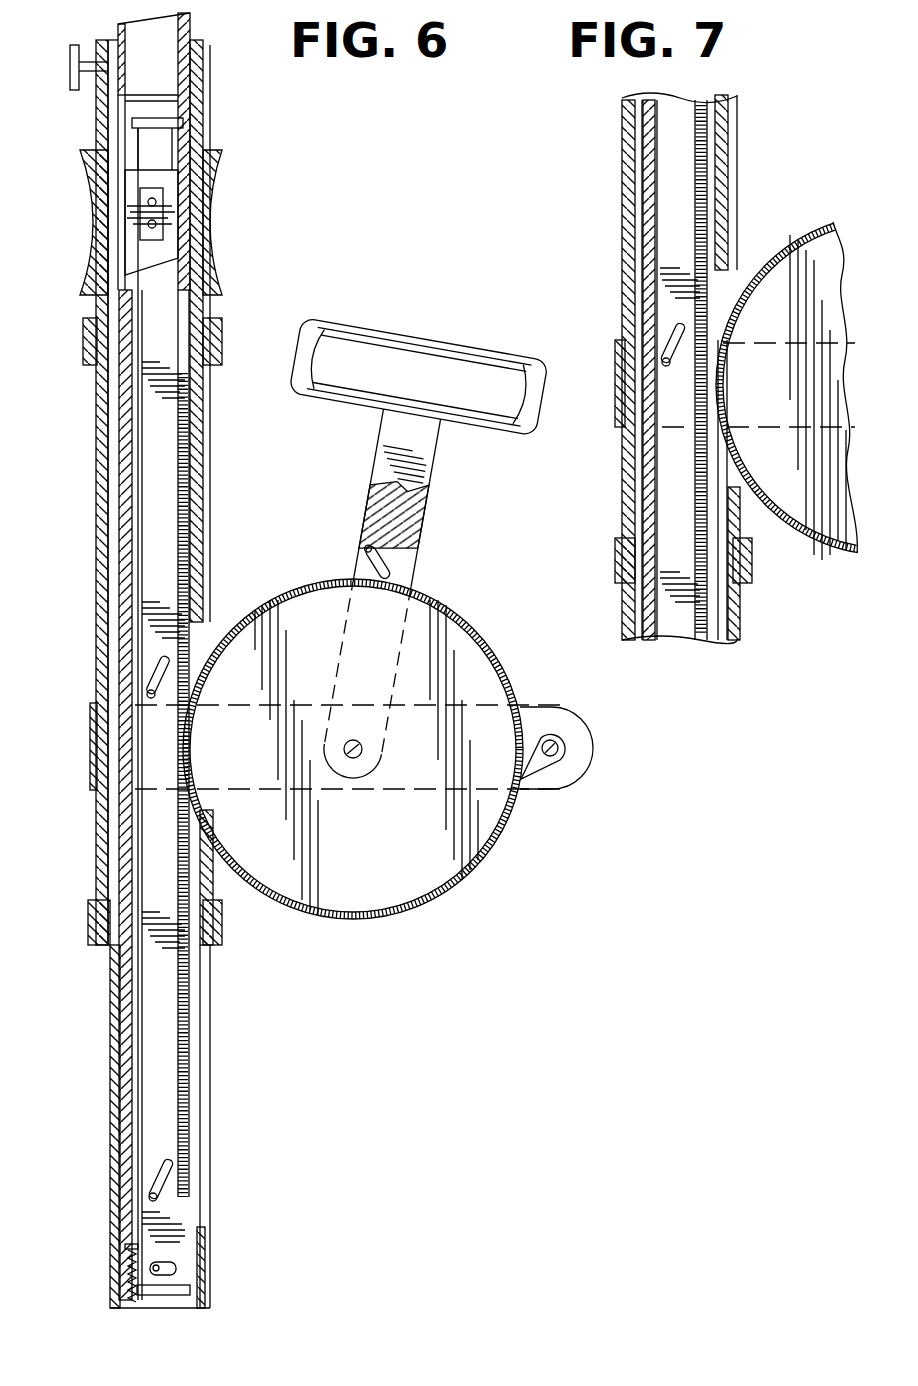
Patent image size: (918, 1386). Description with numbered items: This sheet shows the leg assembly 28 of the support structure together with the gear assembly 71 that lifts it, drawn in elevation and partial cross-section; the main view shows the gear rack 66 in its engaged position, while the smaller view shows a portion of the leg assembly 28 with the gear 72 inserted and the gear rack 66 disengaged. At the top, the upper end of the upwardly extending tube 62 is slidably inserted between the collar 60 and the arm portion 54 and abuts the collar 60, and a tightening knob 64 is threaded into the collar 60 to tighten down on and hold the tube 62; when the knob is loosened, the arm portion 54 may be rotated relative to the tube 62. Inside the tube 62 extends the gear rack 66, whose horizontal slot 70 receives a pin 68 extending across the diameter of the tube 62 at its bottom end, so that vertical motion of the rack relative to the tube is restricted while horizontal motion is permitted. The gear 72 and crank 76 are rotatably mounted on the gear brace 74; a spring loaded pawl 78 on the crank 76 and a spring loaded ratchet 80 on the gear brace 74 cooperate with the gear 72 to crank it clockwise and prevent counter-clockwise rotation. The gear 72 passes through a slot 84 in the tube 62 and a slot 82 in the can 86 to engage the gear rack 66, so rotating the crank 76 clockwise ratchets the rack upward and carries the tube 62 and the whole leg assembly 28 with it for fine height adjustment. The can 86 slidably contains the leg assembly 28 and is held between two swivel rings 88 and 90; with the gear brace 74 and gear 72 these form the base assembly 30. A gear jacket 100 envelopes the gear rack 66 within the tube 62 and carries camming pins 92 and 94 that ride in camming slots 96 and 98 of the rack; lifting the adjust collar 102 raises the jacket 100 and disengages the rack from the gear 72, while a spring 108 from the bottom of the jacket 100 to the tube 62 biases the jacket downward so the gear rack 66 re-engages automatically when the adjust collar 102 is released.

In FIG. 6, the leg assembly 28 is at (226, 222).
In FIG. 6, the base assembly 30 is at (480, 907).
In FIG. 6, the arm portion 54 is at (192, 26).
In FIG. 6, the collar 60 is at (206, 45).
In FIG. 6, the tube 62 is at (206, 72).
In FIG. 7, the tube 62 is at (636, 133).
In FIG. 6, the tightening knob 64 is at (72, 70).
In FIG. 6, the gear rack 66 is at (128, 570).
In FIG. 7, the gear rack 66 is at (648, 165).
In FIG. 6, the pin 68 is at (130, 1296).
In FIG. 6, the horizontal slot 70 is at (170, 1268).
In FIG. 6, the gear assembly 71 is at (590, 738).
In FIG. 6, the gear 72 is at (348, 925).
In FIG. 6, the gear brace 74 is at (556, 790).
In FIG. 6, the crank 76 is at (418, 377).
In FIG. 6, the spring loaded pawl 78 is at (398, 568).
In FIG. 6, the spring loaded ratchet 80 is at (560, 760).
In FIG. 6, the slot 82 is at (200, 636).
In FIG. 7, the slot 82 is at (701, 370).
In FIG. 6, the slot 84 is at (198, 1232).
In FIG. 6, the can 86 is at (97, 836).
In FIG. 7, the can 86 is at (625, 222).
In FIG. 6, the swivel ring 88 is at (84, 340).
In FIG. 6, the swivel ring 90 is at (88, 928).
In FIG. 7, the swivel ring 90 is at (615, 570).
In FIG. 6, the camming pin 92 is at (148, 690).
In FIG. 7, the camming pin 92 is at (684, 325).
In FIG. 6, the camming pin 94 is at (150, 1200).
In FIG. 6, the camming slot 96 is at (160, 660).
In FIG. 7, the camming slot 96 is at (692, 352).
In FIG. 6, the camming slot 98 is at (160, 1160).
In FIG. 6, the gear jacket 100 is at (118, 1128).
In FIG. 7, the gear jacket 100 is at (655, 272).
In FIG. 6, the adjust collar 102 is at (82, 165).
In FIG. 6, the spring 108 is at (128, 1275).